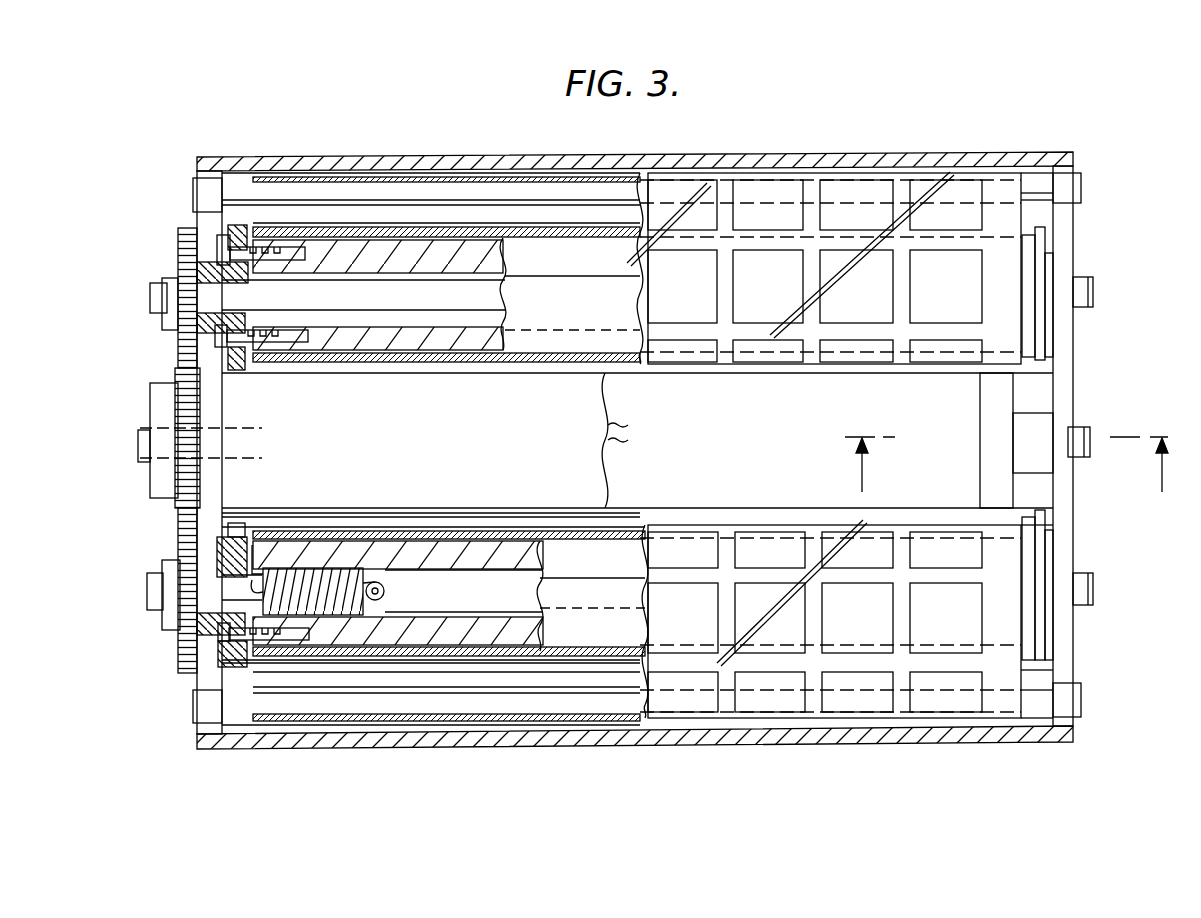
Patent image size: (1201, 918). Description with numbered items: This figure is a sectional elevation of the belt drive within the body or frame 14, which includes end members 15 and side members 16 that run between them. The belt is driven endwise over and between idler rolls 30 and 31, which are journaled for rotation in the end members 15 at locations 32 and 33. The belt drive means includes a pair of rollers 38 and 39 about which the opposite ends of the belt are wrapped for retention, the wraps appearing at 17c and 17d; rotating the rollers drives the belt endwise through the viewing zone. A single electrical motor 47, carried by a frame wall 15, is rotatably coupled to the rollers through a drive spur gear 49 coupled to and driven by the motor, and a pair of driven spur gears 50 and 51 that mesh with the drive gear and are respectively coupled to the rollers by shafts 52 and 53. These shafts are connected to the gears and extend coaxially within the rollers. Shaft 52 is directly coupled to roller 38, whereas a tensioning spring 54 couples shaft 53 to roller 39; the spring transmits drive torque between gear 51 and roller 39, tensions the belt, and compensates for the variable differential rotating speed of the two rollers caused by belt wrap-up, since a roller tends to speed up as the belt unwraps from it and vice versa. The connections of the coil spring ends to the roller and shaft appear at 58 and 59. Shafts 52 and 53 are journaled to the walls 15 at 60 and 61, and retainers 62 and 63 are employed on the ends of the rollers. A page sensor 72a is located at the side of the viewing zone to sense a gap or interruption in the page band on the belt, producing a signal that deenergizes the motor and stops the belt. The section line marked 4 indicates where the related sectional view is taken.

The body or frame 14 is at (256, 140).
The end members 15 is at (1073, 372).
The side members 16 is at (846, 154).
The belt wrap 17c is at (380, 226).
The belt wrap 17d is at (376, 652).
The idler shaft or roll 30 is at (545, 190).
The idler shaft or roll 31 is at (543, 703).
The journal location 32 is at (1082, 185).
The journal location 33 is at (1082, 700).
The roller 38 is at (571, 268).
The roller 39 is at (592, 621).
The electrical motor 47 is at (637, 440).
The drive spur gear 49 is at (190, 500).
The driven spur gear 50 is at (178, 350).
The driven spur gear 51 is at (185, 634).
The shaft 52 is at (390, 300).
The shaft 53 is at (557, 592).
The tensioning spring 54 is at (325, 580).
The spring end connection 58 is at (240, 532).
The spring end connection 59 is at (386, 592).
The journal 60 is at (1050, 256).
The journal 61 is at (1050, 556).
The retainer 62 is at (212, 222).
The retainer 63 is at (222, 660).
The page sensor 72a is at (990, 432).
The section line 4- 4 is at (1007, 469).